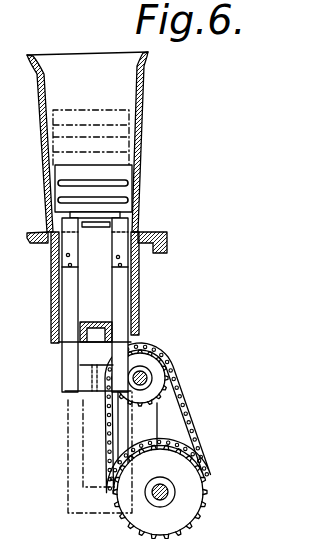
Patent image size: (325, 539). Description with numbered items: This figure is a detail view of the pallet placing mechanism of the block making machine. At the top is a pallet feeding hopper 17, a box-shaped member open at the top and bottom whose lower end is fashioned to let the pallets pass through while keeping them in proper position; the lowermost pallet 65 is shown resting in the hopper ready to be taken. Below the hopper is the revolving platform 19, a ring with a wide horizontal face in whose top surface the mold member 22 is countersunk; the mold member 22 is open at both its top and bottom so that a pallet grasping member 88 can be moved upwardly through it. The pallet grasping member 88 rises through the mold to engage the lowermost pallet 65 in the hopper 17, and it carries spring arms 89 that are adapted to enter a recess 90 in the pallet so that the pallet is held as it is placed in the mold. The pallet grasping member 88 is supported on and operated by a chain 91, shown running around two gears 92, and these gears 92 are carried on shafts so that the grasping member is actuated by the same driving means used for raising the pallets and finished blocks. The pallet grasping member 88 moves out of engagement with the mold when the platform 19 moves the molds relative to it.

The pallet feeding hopper 17 is at (140, 87).
The piston 65 is at (125, 168).
The recess 90 is at (130, 183).
The revolving platform 19 is at (165, 231).
The mold member 22 is at (50, 298).
The pallet grasping member 88 is at (78, 290).
The spring arm 89 is at (113, 228).
The chain 91 is at (108, 434).
The gear 92 is at (221, 459).